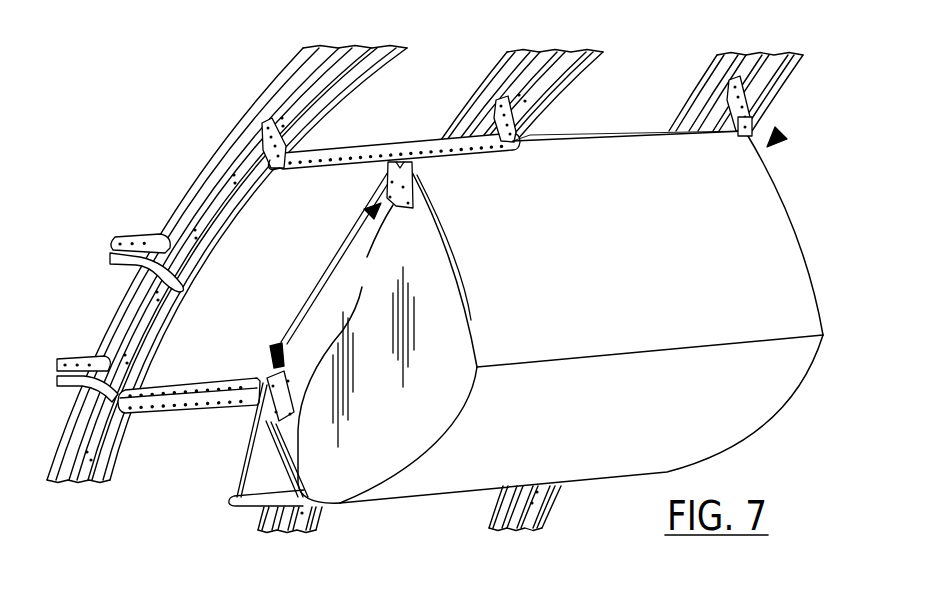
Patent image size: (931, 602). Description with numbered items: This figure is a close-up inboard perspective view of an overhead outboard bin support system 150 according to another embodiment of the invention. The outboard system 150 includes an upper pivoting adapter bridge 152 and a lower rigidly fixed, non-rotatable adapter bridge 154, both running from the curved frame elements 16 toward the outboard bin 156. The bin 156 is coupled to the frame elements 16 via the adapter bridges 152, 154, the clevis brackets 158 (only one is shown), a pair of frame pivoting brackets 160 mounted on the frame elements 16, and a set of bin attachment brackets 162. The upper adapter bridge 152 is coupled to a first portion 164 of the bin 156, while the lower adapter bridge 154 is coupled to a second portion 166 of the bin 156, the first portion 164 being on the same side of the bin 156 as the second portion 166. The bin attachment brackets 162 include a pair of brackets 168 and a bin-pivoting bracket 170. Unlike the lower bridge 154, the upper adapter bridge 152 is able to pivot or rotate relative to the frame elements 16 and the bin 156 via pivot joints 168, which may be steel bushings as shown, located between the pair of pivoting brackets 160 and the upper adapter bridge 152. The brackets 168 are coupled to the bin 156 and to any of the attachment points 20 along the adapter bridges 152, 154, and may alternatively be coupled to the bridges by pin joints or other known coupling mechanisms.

The frame element 16 is at (219, 236).
The attachment point 20 is at (358, 161).
The overhead outboard bin support system 150 is at (778, 137).
The upper pivoting adapter bridge 152 is at (353, 150).
The lower rigidly fixed adapter bridge 154 is at (174, 382).
The outboard bin 156 is at (403, 425).
The clevis bracket 158 is at (85, 357).
The frame pivoting bracket 160 is at (273, 163).
The bin attachment bracket 162 is at (394, 206).
The first portion of the bin 164 is at (364, 212).
The second portion of the bin 166 is at (273, 347).
The bracket 168 is at (273, 160).
The bin-pivoting bracket 170 is at (750, 115).